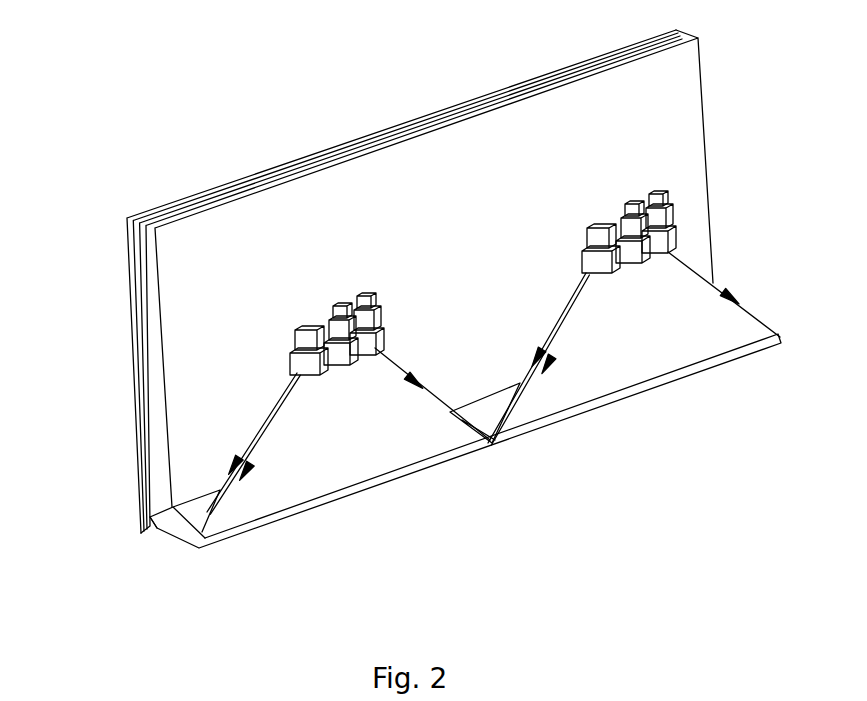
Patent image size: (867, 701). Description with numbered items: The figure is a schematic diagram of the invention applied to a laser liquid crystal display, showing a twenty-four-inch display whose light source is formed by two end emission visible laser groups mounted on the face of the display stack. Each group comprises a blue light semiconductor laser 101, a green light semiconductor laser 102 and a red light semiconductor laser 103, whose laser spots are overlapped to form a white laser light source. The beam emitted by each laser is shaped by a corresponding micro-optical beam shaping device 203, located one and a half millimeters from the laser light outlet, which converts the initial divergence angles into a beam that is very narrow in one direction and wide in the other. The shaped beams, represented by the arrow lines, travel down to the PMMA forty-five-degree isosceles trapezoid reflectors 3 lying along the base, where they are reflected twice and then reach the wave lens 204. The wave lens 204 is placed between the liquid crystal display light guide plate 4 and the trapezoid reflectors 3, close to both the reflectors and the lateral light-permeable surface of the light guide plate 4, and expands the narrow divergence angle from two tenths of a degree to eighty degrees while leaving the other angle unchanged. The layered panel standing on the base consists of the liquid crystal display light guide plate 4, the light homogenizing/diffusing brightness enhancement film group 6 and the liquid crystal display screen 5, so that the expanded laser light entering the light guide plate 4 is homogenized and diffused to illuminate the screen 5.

The reflector 3 is at (182, 532).
The liquid crystal display light guide plate 4 is at (140, 390).
The liquid crystal display screen 5 is at (143, 497).
The light homogenizing/diffusing brightness enhancement film group 6 is at (141, 447).
The blue light semiconductor laser 101 is at (298, 320).
The green light semiconductor laser 102 is at (333, 318).
The red light semiconductor laser 103 is at (357, 300).
The micro-optical beam shaping device 203 is at (378, 343).
The wave lens 204 is at (165, 520).